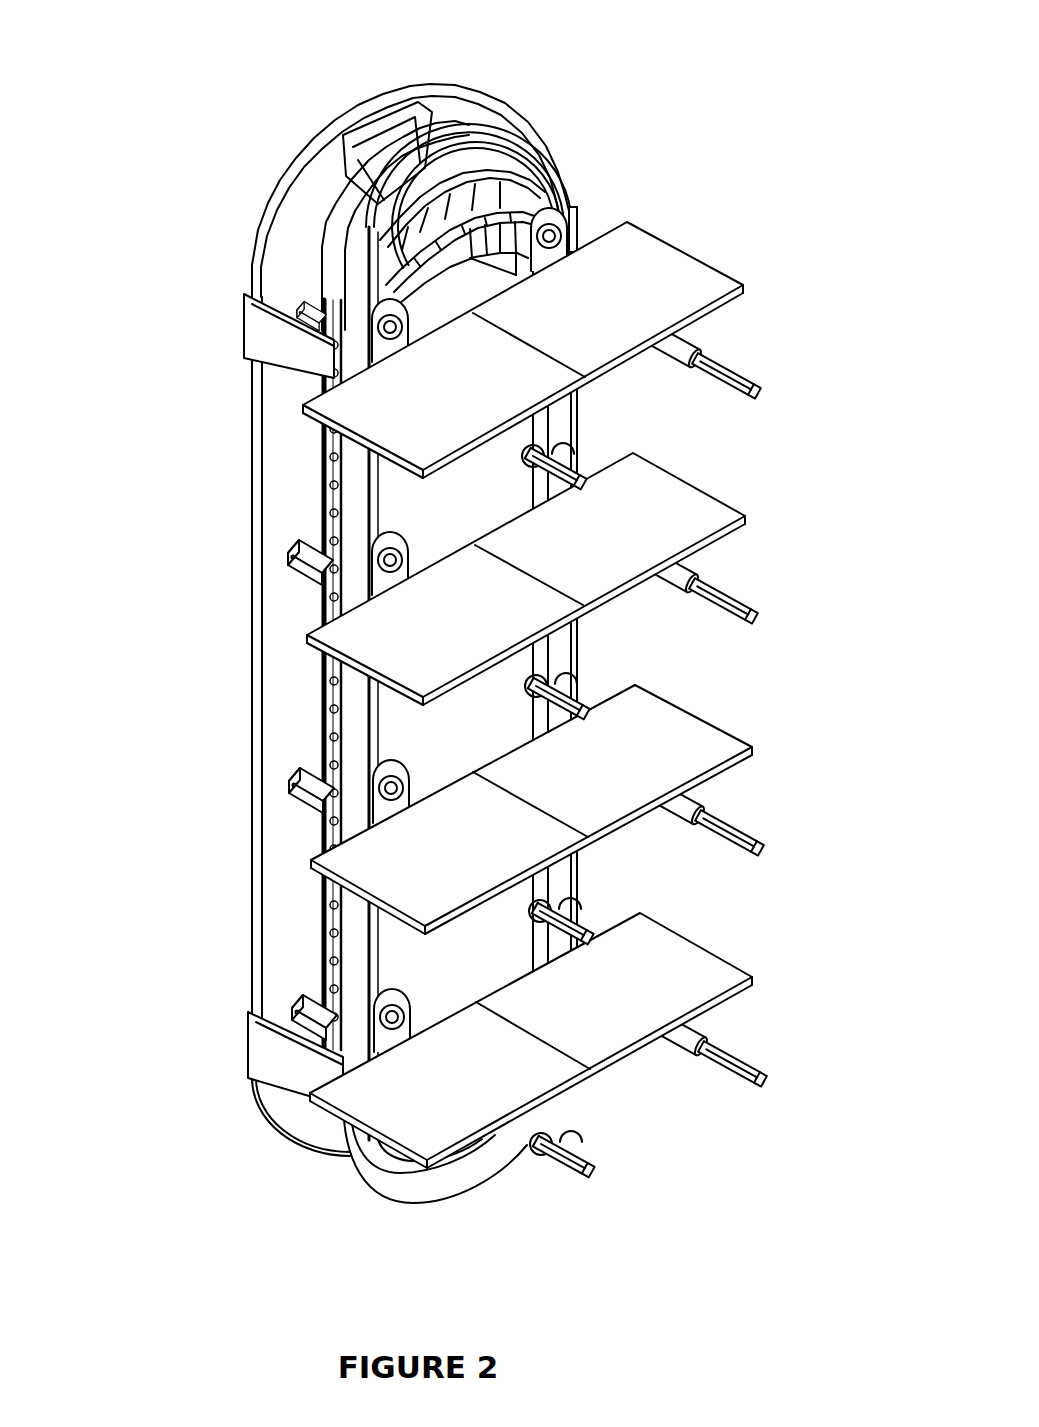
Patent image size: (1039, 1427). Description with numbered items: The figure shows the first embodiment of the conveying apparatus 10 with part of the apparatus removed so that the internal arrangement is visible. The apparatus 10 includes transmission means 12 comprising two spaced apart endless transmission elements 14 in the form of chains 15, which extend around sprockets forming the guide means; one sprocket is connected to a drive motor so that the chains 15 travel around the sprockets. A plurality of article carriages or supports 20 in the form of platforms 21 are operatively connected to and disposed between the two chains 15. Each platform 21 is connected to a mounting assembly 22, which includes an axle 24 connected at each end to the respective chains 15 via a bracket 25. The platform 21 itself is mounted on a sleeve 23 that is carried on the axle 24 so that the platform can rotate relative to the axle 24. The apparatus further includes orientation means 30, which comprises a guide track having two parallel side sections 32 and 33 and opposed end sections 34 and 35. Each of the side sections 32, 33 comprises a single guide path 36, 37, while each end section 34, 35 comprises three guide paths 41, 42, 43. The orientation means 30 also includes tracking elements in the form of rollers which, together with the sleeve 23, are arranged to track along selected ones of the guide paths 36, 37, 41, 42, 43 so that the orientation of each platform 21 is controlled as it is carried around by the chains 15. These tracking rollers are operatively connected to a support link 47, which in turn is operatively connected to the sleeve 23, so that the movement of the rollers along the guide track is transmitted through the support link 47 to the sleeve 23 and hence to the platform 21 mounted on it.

The conveying apparatus 10 is at (425, 641).
The transmission means 12 is at (323, 750).
The endless transmission element 14 is at (320, 669).
The chain 15 is at (322, 514).
The article carriage 20 is at (330, 855).
The platform 21 is at (568, 772).
The mounting assembly 22 is at (568, 890).
The sleeve 23 is at (515, 908).
The axle 24 is at (560, 923).
The bracket 25 is at (343, 1028).
The orientation means 30 is at (578, 185).
The side section 32 is at (357, 452).
The side section 33 is at (562, 422).
The end section 34 is at (387, 217).
The end section 35 is at (450, 1177).
The guide path 36 is at (372, 736).
The guide path 37 is at (553, 658).
The guide path 41 is at (452, 195).
The guide path 42 is at (472, 205).
The guide path 43 is at (522, 222).
The support link 47 is at (383, 581).